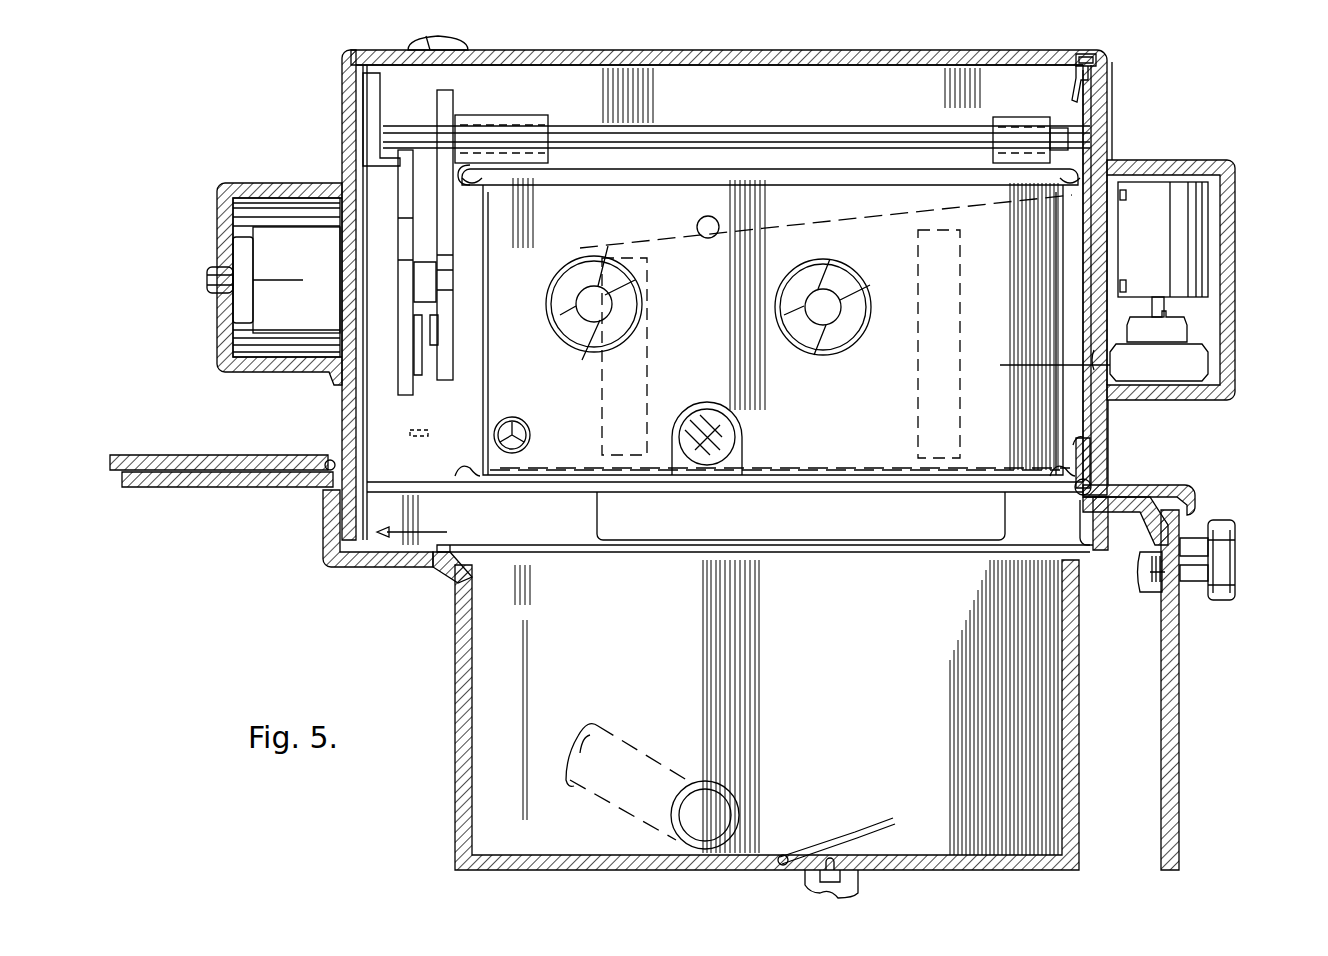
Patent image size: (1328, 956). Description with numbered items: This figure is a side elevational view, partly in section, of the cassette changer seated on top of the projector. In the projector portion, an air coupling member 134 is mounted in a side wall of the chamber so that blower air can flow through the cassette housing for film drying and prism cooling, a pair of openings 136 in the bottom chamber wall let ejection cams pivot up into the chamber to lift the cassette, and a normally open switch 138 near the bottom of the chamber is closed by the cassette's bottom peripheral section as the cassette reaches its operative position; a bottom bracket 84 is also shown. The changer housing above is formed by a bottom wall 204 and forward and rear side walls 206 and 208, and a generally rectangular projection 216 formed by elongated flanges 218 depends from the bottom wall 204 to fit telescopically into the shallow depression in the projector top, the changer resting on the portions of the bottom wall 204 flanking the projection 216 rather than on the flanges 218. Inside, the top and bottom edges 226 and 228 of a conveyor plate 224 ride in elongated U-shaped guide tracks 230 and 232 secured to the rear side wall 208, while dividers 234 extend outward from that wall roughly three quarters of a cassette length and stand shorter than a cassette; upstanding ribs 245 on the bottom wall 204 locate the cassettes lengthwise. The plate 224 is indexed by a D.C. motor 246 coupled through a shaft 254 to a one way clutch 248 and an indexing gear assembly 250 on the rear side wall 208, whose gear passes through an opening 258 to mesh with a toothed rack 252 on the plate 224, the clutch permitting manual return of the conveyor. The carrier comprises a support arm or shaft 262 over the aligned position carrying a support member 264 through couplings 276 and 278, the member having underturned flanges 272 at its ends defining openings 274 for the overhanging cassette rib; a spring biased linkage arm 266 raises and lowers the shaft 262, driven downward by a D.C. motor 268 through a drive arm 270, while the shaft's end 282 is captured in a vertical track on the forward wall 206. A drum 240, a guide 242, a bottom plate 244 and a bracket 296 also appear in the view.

The bottom bracket 84 is at (698, 872).
The air coupling member 134 is at (737, 808).
The openings 136 is at (515, 872).
The normally open switch 138 is at (865, 835).
The bottom wall 204 is at (460, 490).
The forward side wall 206 is at (342, 95).
The rear side wall 208 is at (1097, 69).
The rectangular projection 216 is at (431, 531).
The elongated flanges 218 is at (590, 508).
The plate 224 is at (1098, 160).
The top edge 226 is at (1094, 67).
The bottom edge 228 is at (1091, 484).
The guide track 230 is at (1079, 76).
The guide track 232 is at (1095, 462).
The dividers 234 is at (778, 248).
The drum 240 is at (923, 360).
The guide 242 is at (918, 238).
The bottom plate 244 is at (918, 435).
The upstanding ribs 245 is at (462, 465).
The D.C. motor 246 is at (1185, 269).
The one way clutch 248 is at (1185, 334).
The indexing gear assembly 250 is at (1195, 368).
The toothed rack 252 is at (1035, 364).
The shaft 254 is at (1168, 308).
The opening 258 is at (1092, 350).
The support arm or shaft 262 is at (780, 125).
The support member 264 is at (597, 178).
The linkage arm 266 is at (439, 254).
The D.C. motor 268 is at (277, 240).
The drive arm 270 is at (400, 183).
The underturned flanges 272 is at (470, 180).
The openings 274 is at (480, 168).
The coupling 276 is at (997, 117).
The coupling 278 is at (510, 120).
The end 282 is at (374, 94).
The bracket 296 is at (1115, 555).